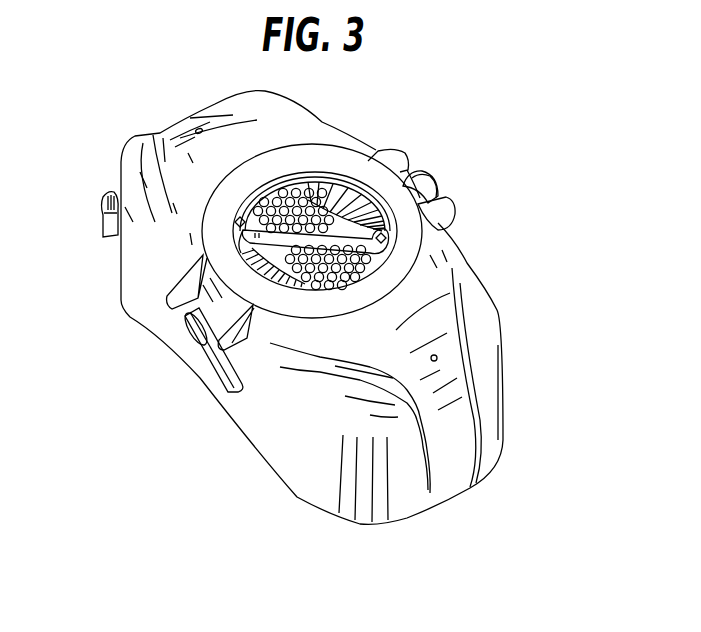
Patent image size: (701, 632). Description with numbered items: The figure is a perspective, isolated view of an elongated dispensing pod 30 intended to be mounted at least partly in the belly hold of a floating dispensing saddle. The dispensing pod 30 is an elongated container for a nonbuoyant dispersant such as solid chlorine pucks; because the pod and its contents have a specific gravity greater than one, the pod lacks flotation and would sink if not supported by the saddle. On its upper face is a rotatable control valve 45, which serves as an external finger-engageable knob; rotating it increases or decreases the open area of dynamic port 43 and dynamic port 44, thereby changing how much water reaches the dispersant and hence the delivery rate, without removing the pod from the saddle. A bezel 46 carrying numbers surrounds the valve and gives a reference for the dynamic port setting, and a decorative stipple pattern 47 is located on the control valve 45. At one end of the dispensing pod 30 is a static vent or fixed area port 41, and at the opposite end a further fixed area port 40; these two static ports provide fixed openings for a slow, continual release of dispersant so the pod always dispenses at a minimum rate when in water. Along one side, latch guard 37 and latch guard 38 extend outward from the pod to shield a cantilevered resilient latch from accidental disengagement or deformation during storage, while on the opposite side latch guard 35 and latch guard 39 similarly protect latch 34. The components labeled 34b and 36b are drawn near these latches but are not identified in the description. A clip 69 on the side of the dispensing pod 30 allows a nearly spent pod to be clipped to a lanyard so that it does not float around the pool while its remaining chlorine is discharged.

The dispensing pod 30 is at (520, 267).
The latch 34 is at (213, 367).
The fin support member 34b is at (187, 334).
The latch guard 35 is at (175, 286).
The button 36b is at (437, 185).
The latch guard 37 is at (404, 155).
The latch guard 38 is at (450, 215).
The latch guard 39 is at (288, 300).
The fixed area port 40 is at (196, 130).
The fixed area port 41 is at (441, 359).
The dynamic port 43 is at (340, 197).
The dynamic port 44 is at (268, 292).
The rotatable control valve 45 is at (382, 257).
The bezel 46 is at (450, 293).
The decorative stipple pattern 47 is at (282, 217).
The clip 69 is at (101, 191).